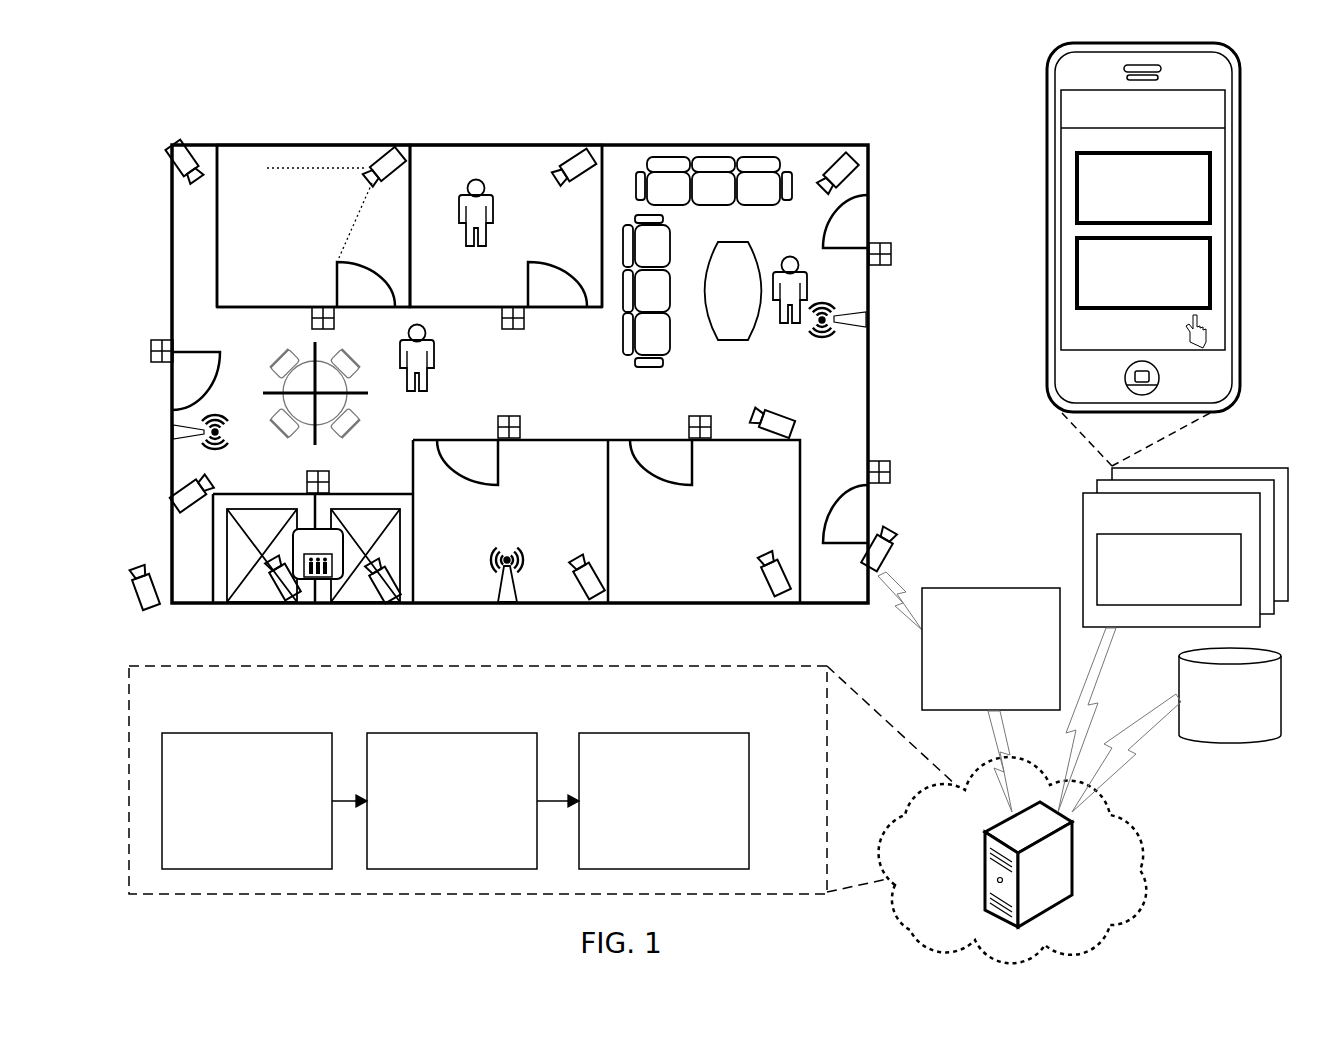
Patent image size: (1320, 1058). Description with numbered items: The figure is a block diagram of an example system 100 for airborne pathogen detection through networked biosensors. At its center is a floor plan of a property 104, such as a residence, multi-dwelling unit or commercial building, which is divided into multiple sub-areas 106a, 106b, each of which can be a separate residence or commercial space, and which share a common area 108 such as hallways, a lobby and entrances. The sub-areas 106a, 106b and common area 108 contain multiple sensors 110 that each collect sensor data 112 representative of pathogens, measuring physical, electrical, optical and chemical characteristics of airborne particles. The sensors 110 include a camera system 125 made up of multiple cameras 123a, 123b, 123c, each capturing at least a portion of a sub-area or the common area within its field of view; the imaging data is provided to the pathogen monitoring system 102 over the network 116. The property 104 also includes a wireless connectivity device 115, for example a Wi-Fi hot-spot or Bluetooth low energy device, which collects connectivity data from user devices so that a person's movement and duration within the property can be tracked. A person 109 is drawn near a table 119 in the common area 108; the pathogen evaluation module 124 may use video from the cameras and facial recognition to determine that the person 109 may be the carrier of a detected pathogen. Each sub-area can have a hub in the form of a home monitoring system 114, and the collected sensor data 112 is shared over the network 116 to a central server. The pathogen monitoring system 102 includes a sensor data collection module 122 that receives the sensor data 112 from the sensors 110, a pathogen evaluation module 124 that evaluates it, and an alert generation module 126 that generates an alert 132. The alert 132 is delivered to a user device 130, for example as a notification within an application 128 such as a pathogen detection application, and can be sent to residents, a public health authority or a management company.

The system 100 is at (158, 100).
The pathogen monitoring system 102 is at (563, 780).
The property 104 is at (881, 139).
The sub-area 106a is at (502, 172).
The sub-area 106b is at (230, 172).
The common area 108 is at (265, 352).
The person 109 is at (420, 359).
The sensor 110 is at (385, 168).
The sensor data 112 is at (1176, 730).
The home monitoring system 114 is at (991, 700).
The wireless connectivity device 115 is at (868, 316).
The network 116 is at (893, 583).
The table 119 is at (322, 394).
The sensor data collection module 122 is at (264, 801).
The camera 123a is at (590, 148).
The camera 123b is at (783, 427).
The camera 123c is at (183, 494).
The pathogen evaluation module 124 is at (473, 801).
The camera system 125 is at (431, 114).
The alert generation module 126 is at (664, 801).
The application 128 is at (1207, 118).
The user device 130 is at (1238, 272).
The alert 132 is at (1208, 170).